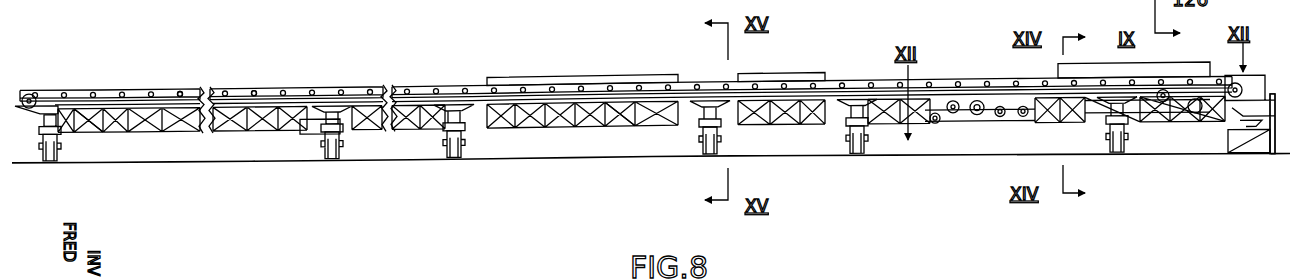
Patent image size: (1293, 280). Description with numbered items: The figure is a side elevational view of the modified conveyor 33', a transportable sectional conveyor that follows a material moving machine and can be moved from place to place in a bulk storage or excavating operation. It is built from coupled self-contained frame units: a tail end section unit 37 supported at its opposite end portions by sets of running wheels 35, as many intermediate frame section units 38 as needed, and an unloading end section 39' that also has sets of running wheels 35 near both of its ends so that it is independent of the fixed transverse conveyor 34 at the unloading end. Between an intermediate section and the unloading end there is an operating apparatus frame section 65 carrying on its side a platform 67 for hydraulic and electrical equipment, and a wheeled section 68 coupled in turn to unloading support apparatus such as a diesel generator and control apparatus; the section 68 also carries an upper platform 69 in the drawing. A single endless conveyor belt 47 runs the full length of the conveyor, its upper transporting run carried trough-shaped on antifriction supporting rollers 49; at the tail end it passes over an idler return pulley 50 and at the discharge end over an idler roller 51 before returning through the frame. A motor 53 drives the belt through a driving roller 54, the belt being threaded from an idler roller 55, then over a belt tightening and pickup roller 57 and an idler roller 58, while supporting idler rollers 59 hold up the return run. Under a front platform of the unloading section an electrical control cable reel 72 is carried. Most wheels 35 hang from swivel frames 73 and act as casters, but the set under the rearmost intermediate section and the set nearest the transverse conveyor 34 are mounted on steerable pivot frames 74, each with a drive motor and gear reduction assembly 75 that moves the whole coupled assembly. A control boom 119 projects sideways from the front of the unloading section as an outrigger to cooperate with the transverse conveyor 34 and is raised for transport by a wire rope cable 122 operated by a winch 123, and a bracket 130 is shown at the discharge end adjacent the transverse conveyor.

The conveyor 33' is at (110, 55).
The transverse conveyor 34 is at (1276, 130).
The running wheels 35 is at (55, 158).
The tail end section unit 37 is at (92, 80).
The intermediate frame section units 38 is at (279, 138).
The unloading end section 39' is at (1036, 61).
The endless conveyor belt 47 is at (268, 88).
The antifriction supporting rollers 49 is at (185, 90).
The idler return pulley 50 is at (27, 92).
The idler roller 51 is at (1242, 90).
The motor 53 is at (1025, 118).
The roller 54 is at (1000, 118).
The idler roller 55 is at (975, 116).
The belt tightening and pickup roller 57 is at (935, 124).
The idler roller 58 is at (953, 100).
The supporting idler rollers 59 is at (97, 110).
The frame section 65 is at (540, 140).
The platform 67 is at (590, 78).
The wheeled section 68 is at (782, 128).
The plate 69 is at (770, 78).
The reel 72 is at (1192, 110).
The swivel frames 73 is at (39, 138).
The steerable pivot frames 74 is at (342, 137).
The drive motor and gear reduction assembly 75 is at (320, 135).
The control boom 119 is at (1205, 125).
The wire rope cable 122 is at (1176, 64).
The winch 123 is at (1165, 90).
The bracket 130 is at (1223, 150).